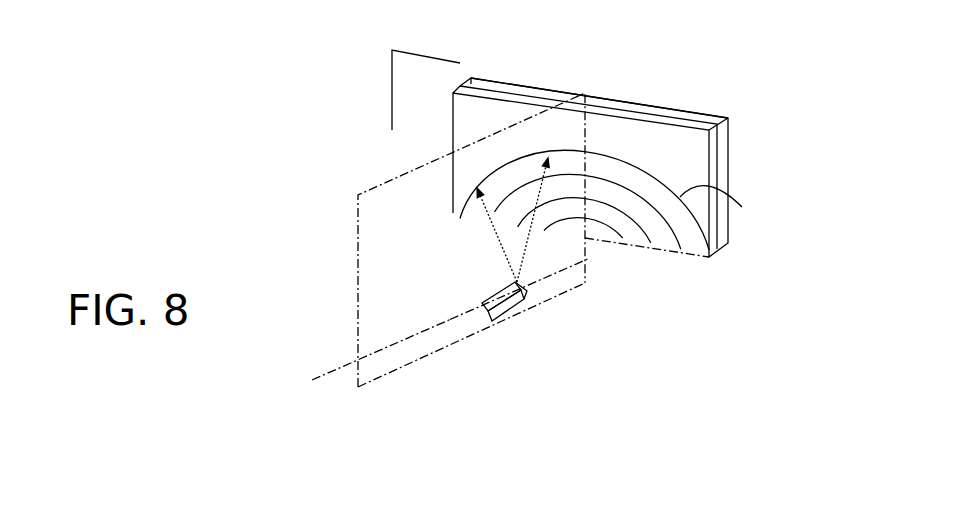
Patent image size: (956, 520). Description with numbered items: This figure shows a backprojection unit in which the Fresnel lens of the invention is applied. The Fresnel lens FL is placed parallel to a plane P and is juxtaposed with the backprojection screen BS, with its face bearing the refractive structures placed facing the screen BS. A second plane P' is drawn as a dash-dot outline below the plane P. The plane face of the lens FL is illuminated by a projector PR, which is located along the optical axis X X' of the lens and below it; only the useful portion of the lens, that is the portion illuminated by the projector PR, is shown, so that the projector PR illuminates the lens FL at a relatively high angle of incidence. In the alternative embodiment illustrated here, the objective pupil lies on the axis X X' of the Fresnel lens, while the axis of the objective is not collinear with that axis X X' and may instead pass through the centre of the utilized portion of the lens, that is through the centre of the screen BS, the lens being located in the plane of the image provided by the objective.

The backprojection screen BS is at (668, 108).
The Fresnel lens FL is at (728, 209).
The plane P is at (426, 90).
The plane P' is at (471, 240).
The optical axis X is at (528, 283).
The optical axis X' is at (362, 367).
The projector PR is at (504, 331).